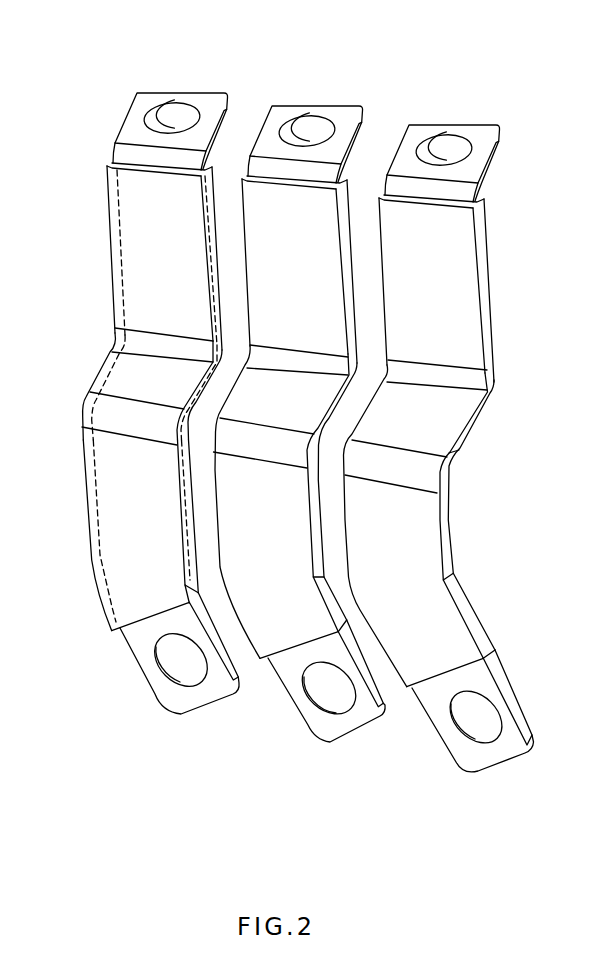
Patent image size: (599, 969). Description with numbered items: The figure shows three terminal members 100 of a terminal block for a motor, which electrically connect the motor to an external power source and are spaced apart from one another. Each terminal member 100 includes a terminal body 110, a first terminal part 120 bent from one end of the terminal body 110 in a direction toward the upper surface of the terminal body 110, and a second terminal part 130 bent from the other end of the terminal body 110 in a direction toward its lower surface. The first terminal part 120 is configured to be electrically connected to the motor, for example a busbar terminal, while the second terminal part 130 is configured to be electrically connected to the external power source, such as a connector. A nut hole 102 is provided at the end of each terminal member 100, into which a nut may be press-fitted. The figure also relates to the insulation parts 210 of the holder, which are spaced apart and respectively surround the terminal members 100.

The terminal member 100 is at (271, 399).
The nut hole 102 is at (153, 127).
The terminal body 110 is at (115, 370).
The first terminal part 120 is at (97, 497).
The second terminal part 130 is at (120, 240).
The insulation part 210 is at (141, 625).